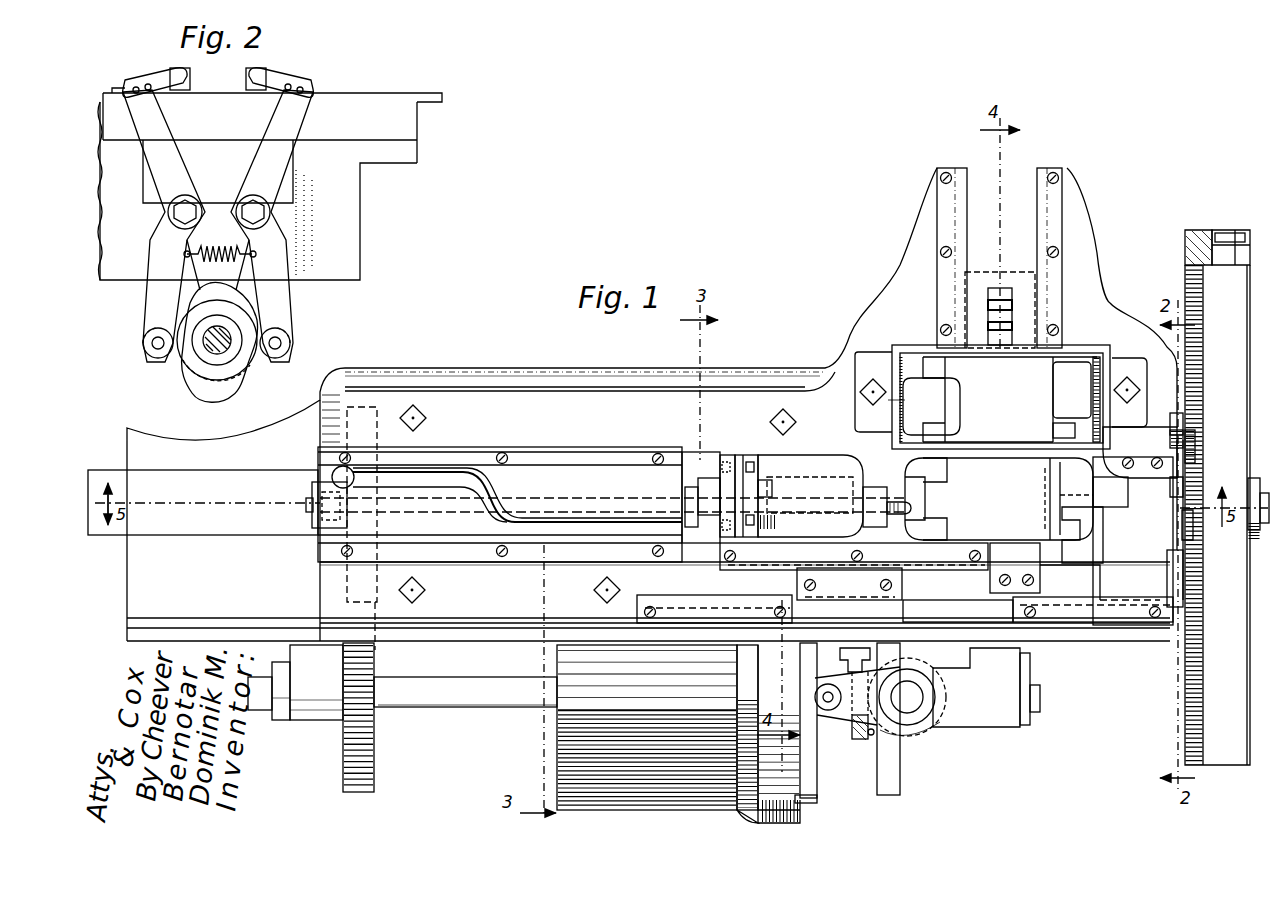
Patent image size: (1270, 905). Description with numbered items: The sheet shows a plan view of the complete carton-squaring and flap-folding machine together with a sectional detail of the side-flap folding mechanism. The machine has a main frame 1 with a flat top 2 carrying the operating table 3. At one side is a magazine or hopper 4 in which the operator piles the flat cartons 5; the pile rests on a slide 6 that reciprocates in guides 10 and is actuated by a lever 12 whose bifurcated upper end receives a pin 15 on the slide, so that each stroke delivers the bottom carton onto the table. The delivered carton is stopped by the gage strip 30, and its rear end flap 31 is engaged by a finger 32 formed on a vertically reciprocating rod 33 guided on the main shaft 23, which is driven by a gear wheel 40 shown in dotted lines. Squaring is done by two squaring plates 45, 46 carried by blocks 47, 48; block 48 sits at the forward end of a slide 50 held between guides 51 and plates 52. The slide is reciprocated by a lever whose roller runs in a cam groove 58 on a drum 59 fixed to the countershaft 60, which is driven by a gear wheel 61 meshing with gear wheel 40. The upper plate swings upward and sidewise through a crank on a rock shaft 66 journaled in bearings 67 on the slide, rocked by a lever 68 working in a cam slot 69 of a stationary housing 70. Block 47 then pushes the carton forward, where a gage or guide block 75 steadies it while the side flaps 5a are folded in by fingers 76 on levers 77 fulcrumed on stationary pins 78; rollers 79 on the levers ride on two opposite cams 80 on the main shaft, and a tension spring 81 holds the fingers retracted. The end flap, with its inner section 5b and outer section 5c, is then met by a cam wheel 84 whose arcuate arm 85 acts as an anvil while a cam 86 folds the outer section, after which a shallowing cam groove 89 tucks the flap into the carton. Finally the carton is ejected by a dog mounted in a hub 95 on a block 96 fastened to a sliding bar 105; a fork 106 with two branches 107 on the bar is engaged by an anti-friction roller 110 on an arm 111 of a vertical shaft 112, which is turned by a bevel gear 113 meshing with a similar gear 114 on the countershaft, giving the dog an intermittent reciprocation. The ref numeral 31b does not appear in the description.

In FIG. 2, the main frame 1 is at (345, 240).
In FIG. 2, the flat top 2 is at (410, 118).
In FIG. 1, the flat top 2 is at (516, 370).
In FIG. 2, the operating table 3 is at (440, 92).
In FIG. 1, the operating table 3 is at (1133, 541).
In FIG. 1, the magazine or hopper 4 is at (900, 352).
In FIG. 1, the cartons 5 is at (999, 419).
In FIG. 1, the side flaps 5a is at (1045, 466).
In FIG. 1, the inner section of end flap 5b is at (1075, 382).
In FIG. 1, the outer section of end flap 5c is at (1097, 390).
In FIG. 1, the slide 6 is at (975, 285).
In FIG. 1, the guides 10 is at (955, 168).
In FIG. 1, the lever 12 is at (1003, 297).
In FIG. 1, the pin 15 is at (998, 318).
In FIG. 2, the main shaft 23 is at (222, 345).
In FIG. 1, the main shaft 23 is at (1250, 470).
In FIG. 1, the gage strip 30 is at (1165, 572).
In FIG. 1, the rear end flap 31 is at (890, 400).
In FIG. 1, the bracket portion 31b is at (930, 476).
In FIG. 1, the finger 32 is at (913, 508).
In FIG. 1, the vertically reciprocating rod 33 is at (1095, 515).
In FIG. 1, the gear wheel 40 is at (365, 405).
In FIG. 1, the squaring plate 45 is at (820, 468).
In FIG. 1, the squaring plate 46 is at (828, 540).
In FIG. 1, the block 47 is at (750, 465).
In FIG. 1, the block 48 is at (730, 455).
In FIG. 1, the slide 50 is at (100, 470).
In FIG. 1, the guides 51 is at (562, 395).
In FIG. 1, the plates 52 is at (560, 455).
In FIG. 1, the cam groove 58 is at (773, 672).
In FIG. 1, the drum 59 is at (575, 735).
In FIG. 1, the countershaft 60 is at (472, 700).
In FIG. 1, the gear wheel 61 is at (375, 727).
In FIG. 1, the rock shaft 66 is at (306, 506).
In FIG. 1, the bearings 67 is at (312, 495).
In FIG. 1, the lever 68 is at (335, 472).
In FIG. 1, the cam slot 69 is at (480, 492).
In FIG. 1, the stationary housing 70 is at (613, 478).
In FIG. 1, the gage or guide block 75 is at (1136, 458).
In FIG. 2, the fingers 76 is at (152, 78).
In FIG. 2, the levers 77 is at (158, 150).
In FIG. 1, the levers 77 is at (1170, 422).
In FIG. 2, the stationary pins 78 is at (182, 208).
In FIG. 2, the anti-friction rollers 79 is at (150, 355).
In FIG. 2, the cams 80 is at (232, 292).
In FIG. 2, the spring 81 is at (210, 262).
In FIG. 1, the cam wheel 84 is at (1220, 308).
In FIG. 1, the arm 85 is at (1212, 236).
In FIG. 1, the cam 86 is at (1224, 233).
In FIG. 1, the cam groove 89 is at (1188, 248).
In FIG. 1, the hub 95 is at (1098, 560).
In FIG. 1, the block 96 is at (1062, 540).
In FIG. 1, the sliding bar 105 is at (982, 600).
In FIG. 1, the fork 106 is at (849, 584).
In FIG. 1, the branches 107 is at (815, 788).
In FIG. 1, the anti-friction roller 110 is at (840, 712).
In FIG. 1, the arm 111 is at (930, 692).
In FIG. 1, the vertical shaft 112 is at (910, 700).
In FIG. 1, the bevel gear 113 is at (942, 728).
In FIG. 1, the bevel gear 114 is at (860, 745).